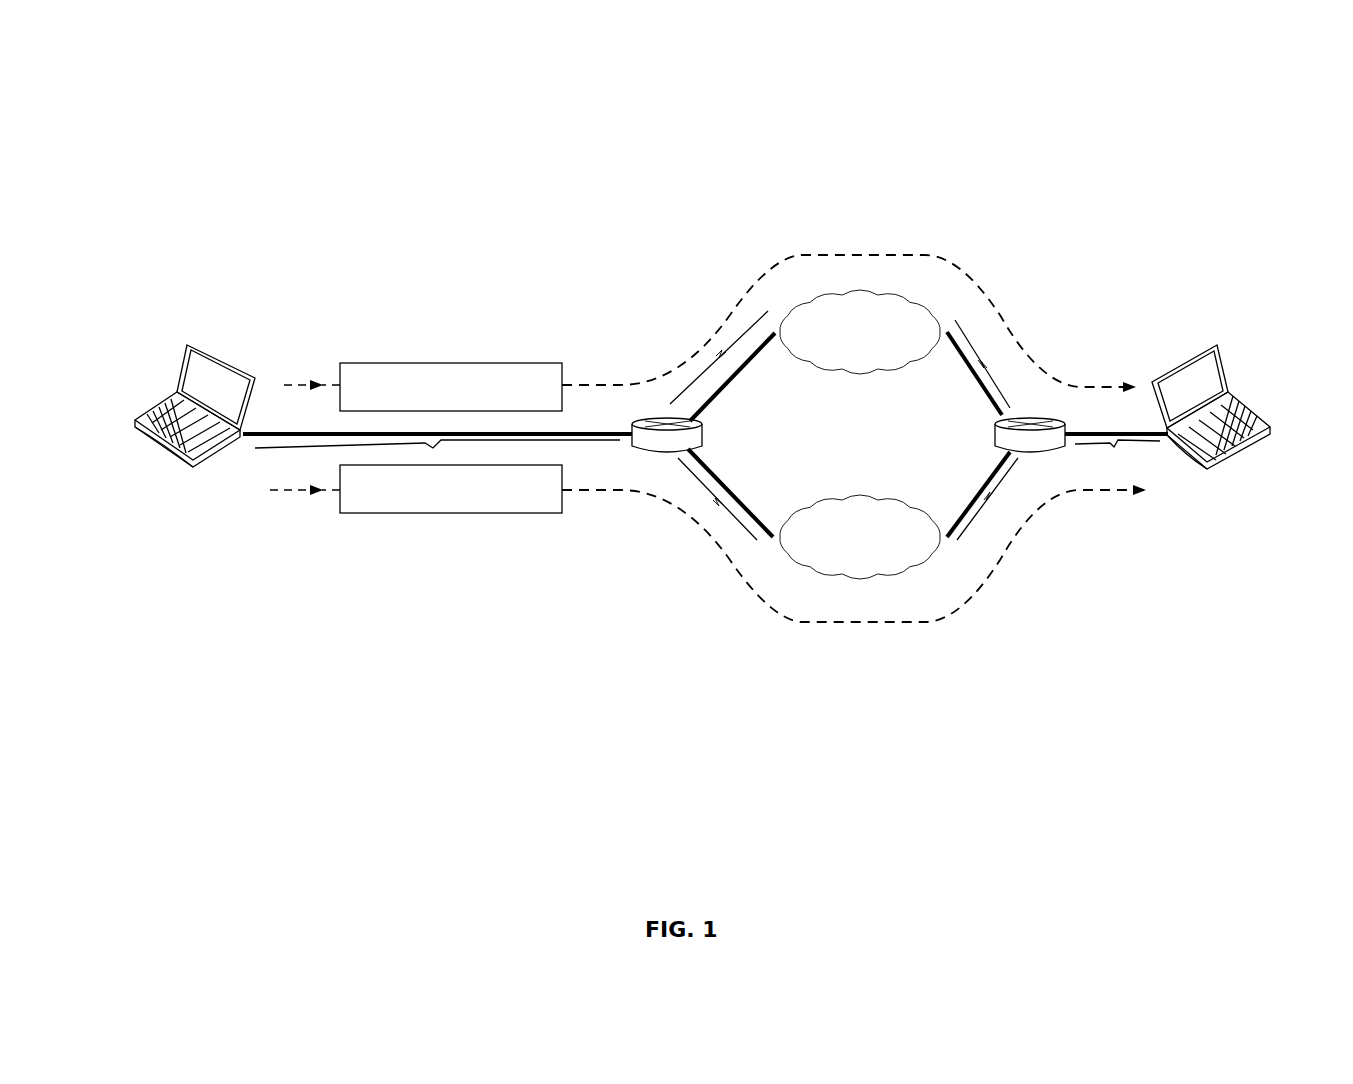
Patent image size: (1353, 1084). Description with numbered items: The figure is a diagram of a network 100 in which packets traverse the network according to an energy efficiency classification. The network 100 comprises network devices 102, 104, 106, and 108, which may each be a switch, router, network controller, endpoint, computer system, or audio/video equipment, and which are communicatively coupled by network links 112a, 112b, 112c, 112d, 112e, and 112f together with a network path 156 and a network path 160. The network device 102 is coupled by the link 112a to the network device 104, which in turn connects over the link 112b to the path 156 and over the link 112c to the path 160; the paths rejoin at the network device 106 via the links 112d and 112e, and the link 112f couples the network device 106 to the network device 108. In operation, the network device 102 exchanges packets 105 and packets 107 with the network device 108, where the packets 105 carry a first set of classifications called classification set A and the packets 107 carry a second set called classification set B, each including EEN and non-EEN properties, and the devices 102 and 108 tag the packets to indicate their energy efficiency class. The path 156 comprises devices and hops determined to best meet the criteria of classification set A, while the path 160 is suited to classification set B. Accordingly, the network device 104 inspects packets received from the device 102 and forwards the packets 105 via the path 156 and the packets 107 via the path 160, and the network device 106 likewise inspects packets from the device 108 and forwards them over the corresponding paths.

The network 100 is at (262, 166).
The network device 102 is at (242, 376).
The network device 104 is at (703, 430).
The packets 105 is at (512, 363).
The network device 106 is at (996, 432).
The packets 107 is at (468, 513).
The network device 108 is at (1177, 370).
The network link 112a is at (584, 426).
The network link 112b is at (754, 374).
The network link 112c is at (745, 479).
The network link 112d is at (952, 374).
The network link 112e is at (971, 479).
The network link 112f is at (1097, 428).
The network path 156 is at (860, 332).
The network path 160 is at (860, 537).